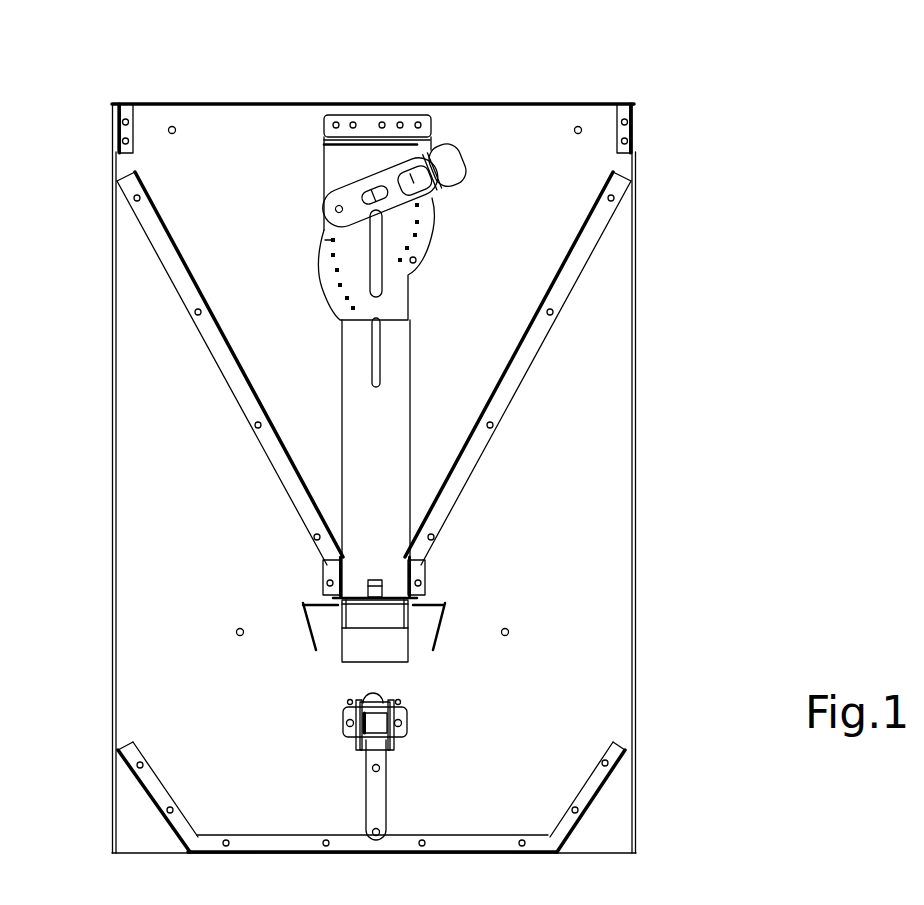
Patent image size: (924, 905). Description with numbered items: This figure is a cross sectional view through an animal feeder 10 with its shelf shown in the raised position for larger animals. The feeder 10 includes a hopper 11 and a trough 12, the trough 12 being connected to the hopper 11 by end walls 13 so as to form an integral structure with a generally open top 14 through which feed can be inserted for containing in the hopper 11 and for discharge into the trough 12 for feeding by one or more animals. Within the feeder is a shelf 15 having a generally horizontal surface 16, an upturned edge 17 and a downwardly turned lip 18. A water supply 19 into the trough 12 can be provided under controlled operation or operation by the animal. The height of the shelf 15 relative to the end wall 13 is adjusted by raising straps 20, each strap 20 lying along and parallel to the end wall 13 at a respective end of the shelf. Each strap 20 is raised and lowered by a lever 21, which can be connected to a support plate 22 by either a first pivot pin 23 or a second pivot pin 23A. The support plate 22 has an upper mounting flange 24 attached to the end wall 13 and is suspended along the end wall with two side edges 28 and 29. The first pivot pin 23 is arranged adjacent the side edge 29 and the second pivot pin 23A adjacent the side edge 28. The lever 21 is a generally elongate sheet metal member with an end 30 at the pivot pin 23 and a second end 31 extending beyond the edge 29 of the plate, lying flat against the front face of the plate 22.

The feeder 10 is at (670, 447).
The hopper 11 is at (553, 233).
The trough 12 is at (595, 783).
The end walls 13 is at (233, 130).
The open top 14 is at (518, 110).
The shelf 15 is at (430, 602).
The horizontal surface 16 is at (315, 600).
The upturned edge 17 is at (300, 605).
The downwardly turned lip 18 is at (305, 607).
The water supply 19 is at (418, 714).
The strap 20 is at (396, 386).
The lever 21 is at (408, 191).
The support plate 22 is at (337, 167).
The first pivot pin 23 is at (320, 207).
The second pivot pin 23A is at (418, 260).
The upper mounting flange 24 is at (372, 122).
The side edge 28 is at (433, 192).
The side edge 29 is at (313, 190).
The end of lever 30 is at (333, 205).
The second end of lever 31 is at (460, 157).